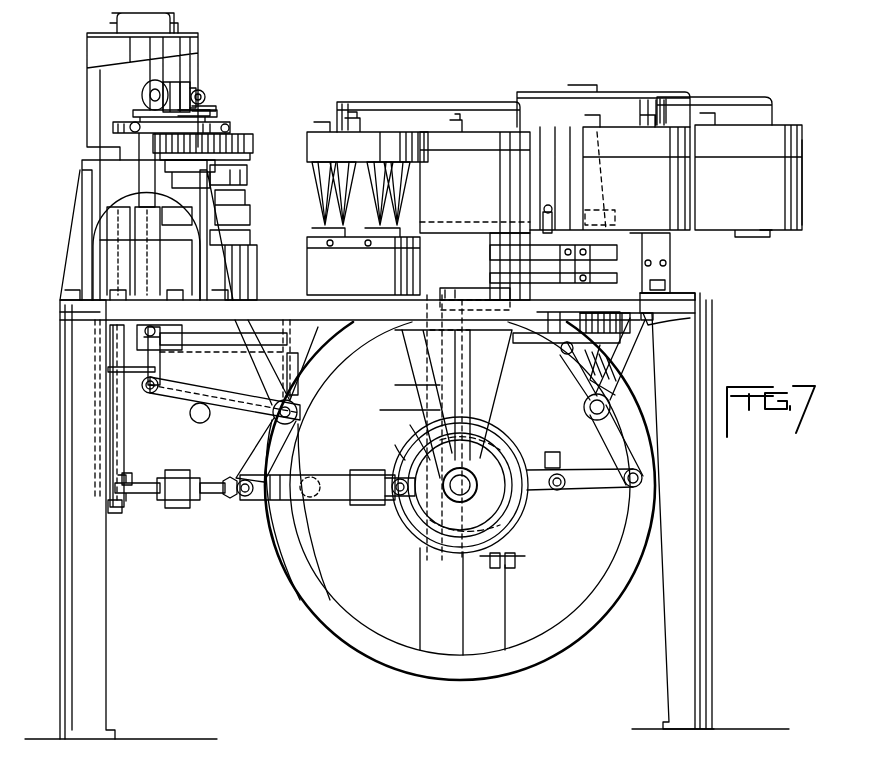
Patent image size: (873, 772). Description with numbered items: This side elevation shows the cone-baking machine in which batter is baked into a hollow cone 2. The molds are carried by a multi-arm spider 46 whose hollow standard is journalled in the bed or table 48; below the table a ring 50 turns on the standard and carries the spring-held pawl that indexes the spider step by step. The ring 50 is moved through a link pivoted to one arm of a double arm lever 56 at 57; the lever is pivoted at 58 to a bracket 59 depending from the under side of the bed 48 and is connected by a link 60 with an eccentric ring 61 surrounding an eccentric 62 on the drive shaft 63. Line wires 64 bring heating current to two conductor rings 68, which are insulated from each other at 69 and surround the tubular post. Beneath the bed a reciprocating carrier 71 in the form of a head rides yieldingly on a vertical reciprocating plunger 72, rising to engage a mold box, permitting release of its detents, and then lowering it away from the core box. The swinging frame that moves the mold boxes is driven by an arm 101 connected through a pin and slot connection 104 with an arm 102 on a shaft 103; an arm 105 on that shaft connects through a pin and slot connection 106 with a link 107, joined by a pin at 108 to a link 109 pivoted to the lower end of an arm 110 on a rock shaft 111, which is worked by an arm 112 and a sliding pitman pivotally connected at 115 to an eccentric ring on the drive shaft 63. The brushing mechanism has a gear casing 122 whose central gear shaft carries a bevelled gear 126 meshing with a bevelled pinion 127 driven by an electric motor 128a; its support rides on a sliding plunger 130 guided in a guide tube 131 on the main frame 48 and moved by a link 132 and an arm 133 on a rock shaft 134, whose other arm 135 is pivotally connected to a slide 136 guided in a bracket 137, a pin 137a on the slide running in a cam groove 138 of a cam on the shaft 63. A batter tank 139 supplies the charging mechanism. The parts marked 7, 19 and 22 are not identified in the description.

The cone 2 is at (318, 198).
The cylinder 7 is at (803, 178).
The arm 19 is at (512, 340).
The cylinder block 22 is at (430, 150).
The multi-arm spider 46 is at (630, 105).
The bed 48 is at (688, 300).
The ring 50 is at (620, 322).
The double arm lever 56 is at (612, 378).
The pivot 57 is at (575, 362).
The pivot 58 is at (590, 415).
The bracket 59 is at (655, 322).
The link 60 is at (607, 490).
The eccentric ring 61 is at (548, 548).
The eccentric 62 is at (523, 460).
The drive shaft 63 is at (430, 538).
The line wires 64 is at (547, 206).
The conductor rings 68 is at (497, 262).
The insulation 69 is at (615, 270).
The reciprocating carrier 71 is at (445, 288).
The vertical reciprocating plunger 72 is at (500, 390).
The arm 101 is at (333, 370).
The arm 102 is at (262, 320).
The shaft 103 is at (115, 513).
The pin and slot connection 104 is at (240, 375).
The arm 105 is at (162, 505).
The pin and slot connection 106 is at (175, 478).
The link 107 is at (206, 480).
The pin 108 is at (230, 496).
The link 109 is at (244, 497).
The arm 110 is at (318, 500).
The rock shaft 111 is at (308, 500).
The arm 112 is at (360, 505).
The pivot connection 115 is at (410, 450).
The gear casing 122 is at (252, 143).
The bevelled gear 126 is at (210, 103).
The bevelled pinion 127 is at (200, 91).
The electric motor 128a is at (200, 80).
The sliding plunger 130 is at (140, 145).
The guide tube 131 is at (145, 235).
The link 132 is at (150, 375).
The arm 133 is at (185, 405).
The rock shaft 134 is at (299, 412).
The arm 135 is at (262, 548).
The slide 136 is at (300, 580).
The bracket 137 is at (372, 507).
The pin 137a is at (390, 500).
The cam groove 138 is at (455, 553).
The batter tank 139 is at (97, 100).